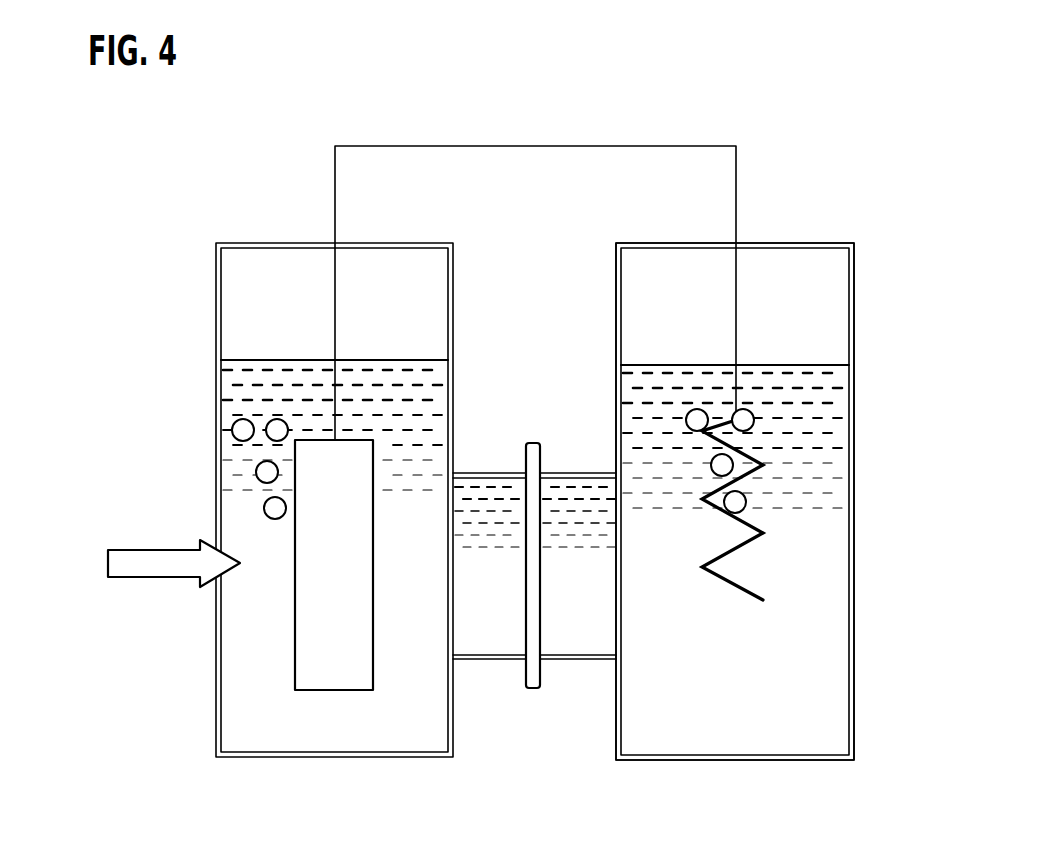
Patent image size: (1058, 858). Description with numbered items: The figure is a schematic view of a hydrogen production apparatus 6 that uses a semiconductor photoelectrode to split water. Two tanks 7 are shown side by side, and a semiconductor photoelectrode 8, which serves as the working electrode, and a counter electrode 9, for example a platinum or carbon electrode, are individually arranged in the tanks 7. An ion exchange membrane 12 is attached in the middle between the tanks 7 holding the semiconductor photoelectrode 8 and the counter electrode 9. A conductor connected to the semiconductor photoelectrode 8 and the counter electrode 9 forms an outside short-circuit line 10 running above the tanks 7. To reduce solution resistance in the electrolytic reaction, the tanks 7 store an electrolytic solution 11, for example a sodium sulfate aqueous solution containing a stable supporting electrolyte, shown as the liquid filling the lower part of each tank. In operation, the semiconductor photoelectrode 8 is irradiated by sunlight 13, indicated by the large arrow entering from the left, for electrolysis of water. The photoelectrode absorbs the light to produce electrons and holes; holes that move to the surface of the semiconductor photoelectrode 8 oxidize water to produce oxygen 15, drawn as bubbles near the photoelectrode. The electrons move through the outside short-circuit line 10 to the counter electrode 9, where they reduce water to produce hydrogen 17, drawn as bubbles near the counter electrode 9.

The hydrogen production apparatus 6 is at (813, 167).
The tanks 7 is at (855, 407).
The semiconductor photoelectrode 8 is at (333, 675).
The counter electrode 9 is at (730, 583).
The outside short-circuit line 10 is at (540, 146).
The electrolytic solution 11 is at (232, 713).
The ion exchange membrane 12 is at (542, 457).
The sunlight 13 is at (150, 578).
The oxygen 15 is at (265, 472).
The hydrogen 17 is at (742, 506).